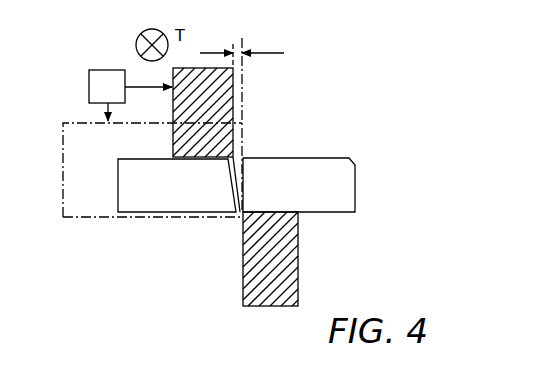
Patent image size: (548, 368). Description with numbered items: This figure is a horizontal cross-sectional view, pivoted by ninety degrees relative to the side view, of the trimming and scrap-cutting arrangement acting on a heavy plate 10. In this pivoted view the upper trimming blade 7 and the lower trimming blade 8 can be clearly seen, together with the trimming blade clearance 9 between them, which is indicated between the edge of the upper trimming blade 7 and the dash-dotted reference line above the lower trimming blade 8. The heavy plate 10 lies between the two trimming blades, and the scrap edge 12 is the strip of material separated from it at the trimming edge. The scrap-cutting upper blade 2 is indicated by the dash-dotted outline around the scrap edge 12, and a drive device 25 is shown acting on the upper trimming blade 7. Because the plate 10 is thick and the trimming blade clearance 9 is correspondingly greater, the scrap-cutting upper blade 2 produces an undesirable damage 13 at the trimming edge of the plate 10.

The scrap-cutting upper blade 2 is at (91, 195).
The upper trimming blade 7 is at (224, 108).
The lower trimming blade 8 is at (258, 268).
The trimming blade clearance 9 is at (237, 46).
The heavy plate 10 is at (292, 160).
The scrap edge 12 is at (172, 196).
The damage 13 is at (242, 163).
The drive device 25 is at (103, 83).